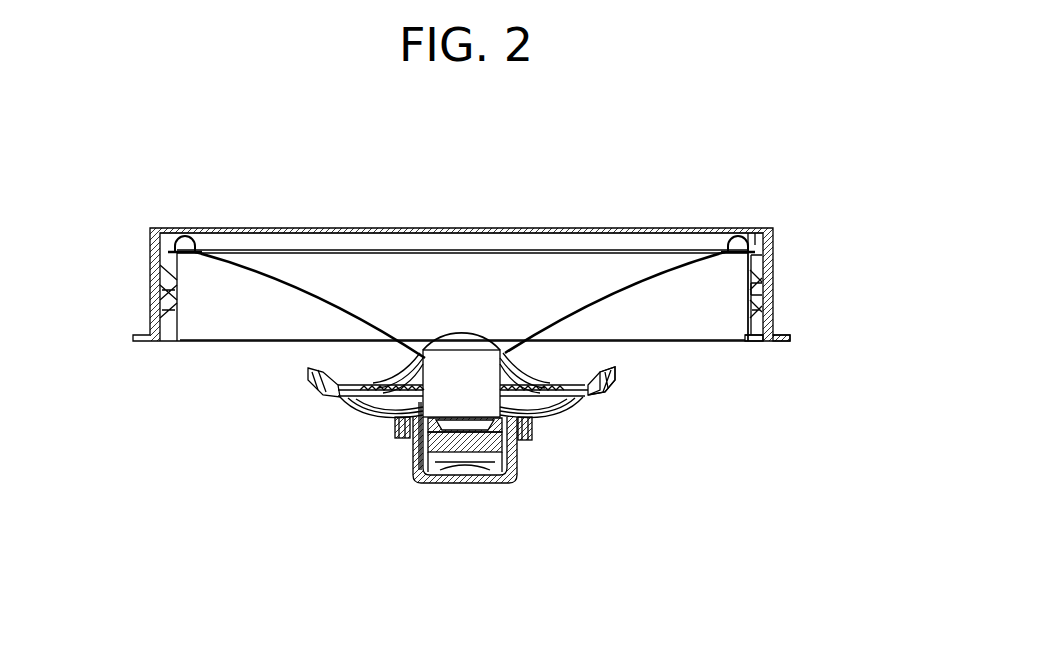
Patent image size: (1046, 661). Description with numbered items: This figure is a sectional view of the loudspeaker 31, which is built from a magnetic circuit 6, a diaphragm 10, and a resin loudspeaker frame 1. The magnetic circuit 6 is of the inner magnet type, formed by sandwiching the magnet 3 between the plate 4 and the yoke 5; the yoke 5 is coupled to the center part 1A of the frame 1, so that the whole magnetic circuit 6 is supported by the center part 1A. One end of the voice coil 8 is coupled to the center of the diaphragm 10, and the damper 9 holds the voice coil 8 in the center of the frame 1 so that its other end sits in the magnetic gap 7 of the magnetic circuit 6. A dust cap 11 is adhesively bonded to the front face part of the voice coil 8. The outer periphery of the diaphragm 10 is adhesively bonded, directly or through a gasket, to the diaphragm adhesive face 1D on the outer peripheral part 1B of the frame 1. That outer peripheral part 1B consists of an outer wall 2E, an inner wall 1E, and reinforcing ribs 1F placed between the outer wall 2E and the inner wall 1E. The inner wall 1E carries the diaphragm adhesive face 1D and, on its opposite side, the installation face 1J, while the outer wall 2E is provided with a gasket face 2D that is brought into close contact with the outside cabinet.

The loudspeaker frame 1 is at (620, 395).
The center part 1A is at (530, 440).
The outer peripheral part 1B is at (783, 347).
The diaphragm adhesive face 1D is at (763, 258).
The inner wall 1E is at (753, 310).
The reinforcing ribs 1F is at (757, 310).
The installation face 1J is at (750, 343).
The gasket face 2D is at (757, 228).
The outer wall 2E is at (767, 288).
The magnet 3 is at (458, 452).
The plate 4 is at (500, 460).
The yoke 5 is at (524, 455).
The magnetic circuit 6 is at (447, 487).
The magnetic gap 7 is at (413, 473).
The voice coil 8 is at (393, 442).
The damper 9 is at (378, 373).
The diaphragm 10 is at (300, 283).
The dust cap 11 is at (440, 337).
The loudspeaker 31 is at (532, 208).